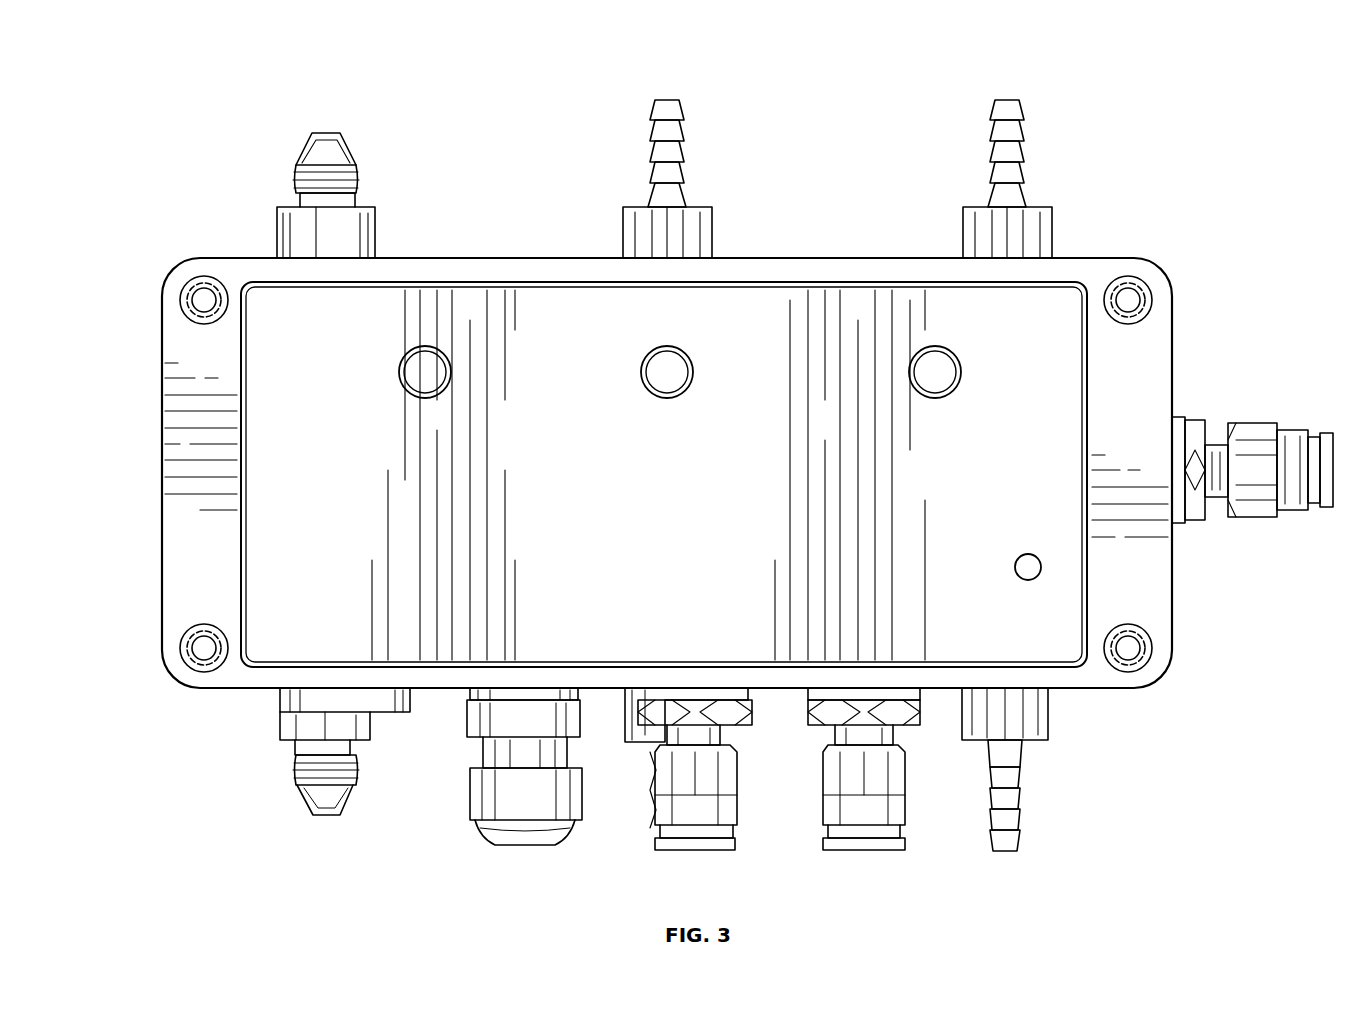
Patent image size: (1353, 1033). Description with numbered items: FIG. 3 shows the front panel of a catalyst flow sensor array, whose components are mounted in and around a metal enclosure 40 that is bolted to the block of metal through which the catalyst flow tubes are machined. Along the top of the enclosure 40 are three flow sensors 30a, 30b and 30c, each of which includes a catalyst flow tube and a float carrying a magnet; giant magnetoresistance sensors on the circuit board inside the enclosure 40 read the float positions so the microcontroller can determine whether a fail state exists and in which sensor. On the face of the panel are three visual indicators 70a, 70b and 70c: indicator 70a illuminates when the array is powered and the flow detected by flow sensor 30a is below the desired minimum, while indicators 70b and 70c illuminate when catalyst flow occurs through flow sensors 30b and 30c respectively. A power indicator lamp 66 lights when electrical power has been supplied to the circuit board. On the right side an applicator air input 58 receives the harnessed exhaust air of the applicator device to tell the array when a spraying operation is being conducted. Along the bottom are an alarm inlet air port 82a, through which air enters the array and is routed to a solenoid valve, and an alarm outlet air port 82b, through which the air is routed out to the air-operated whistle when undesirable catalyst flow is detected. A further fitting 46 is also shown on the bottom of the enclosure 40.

The flow sensor 30a is at (326, 130).
The flow sensor 30b is at (667, 94).
The flow sensor 30c is at (1003, 94).
The enclosure 40 is at (162, 435).
The cable gland 46 is at (505, 845).
The applicator air input 58 is at (1262, 423).
The power indicator lamp 66 is at (1014, 567).
The visual indicator 70a is at (450, 380).
The visual indicator 70b is at (692, 380).
The visual indicator 70c is at (960, 380).
The alarm inlet air port 82a is at (880, 850).
The alarm outlet air port 82b is at (735, 820).